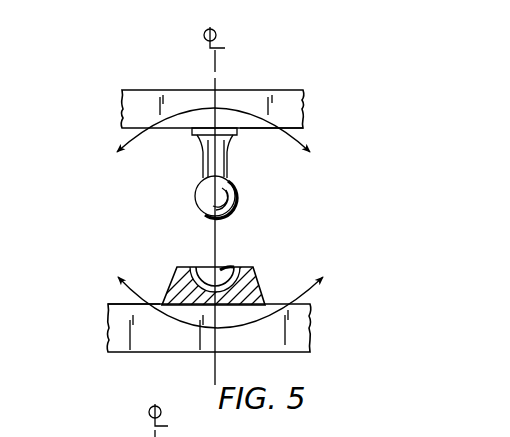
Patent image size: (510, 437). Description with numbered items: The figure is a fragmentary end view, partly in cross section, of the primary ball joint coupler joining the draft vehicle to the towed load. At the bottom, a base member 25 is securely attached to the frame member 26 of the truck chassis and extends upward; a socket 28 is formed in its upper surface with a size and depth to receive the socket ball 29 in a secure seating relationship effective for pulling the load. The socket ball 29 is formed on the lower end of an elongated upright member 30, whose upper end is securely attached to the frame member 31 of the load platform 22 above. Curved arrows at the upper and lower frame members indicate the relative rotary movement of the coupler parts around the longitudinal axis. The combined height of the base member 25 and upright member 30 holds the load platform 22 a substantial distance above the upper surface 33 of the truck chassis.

The load platform 22 is at (122, 92).
The frame member 31 is at (258, 98).
The elongated upright member 30 is at (202, 158).
The socket ball 29 is at (233, 207).
The socket 28 is at (226, 275).
The base member 25 is at (258, 271).
The frame member 26 is at (115, 333).
The upper surface 33 is at (118, 303).